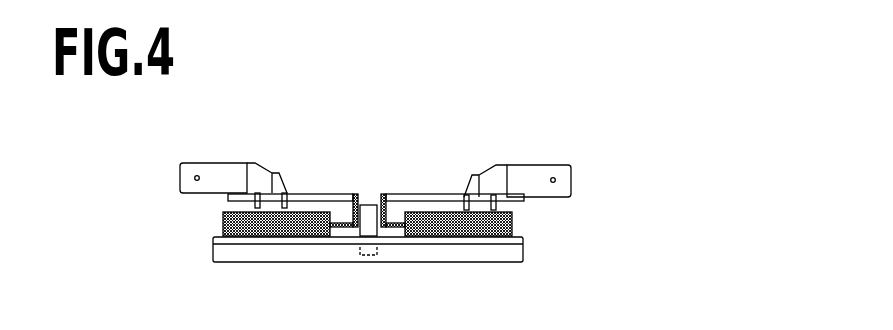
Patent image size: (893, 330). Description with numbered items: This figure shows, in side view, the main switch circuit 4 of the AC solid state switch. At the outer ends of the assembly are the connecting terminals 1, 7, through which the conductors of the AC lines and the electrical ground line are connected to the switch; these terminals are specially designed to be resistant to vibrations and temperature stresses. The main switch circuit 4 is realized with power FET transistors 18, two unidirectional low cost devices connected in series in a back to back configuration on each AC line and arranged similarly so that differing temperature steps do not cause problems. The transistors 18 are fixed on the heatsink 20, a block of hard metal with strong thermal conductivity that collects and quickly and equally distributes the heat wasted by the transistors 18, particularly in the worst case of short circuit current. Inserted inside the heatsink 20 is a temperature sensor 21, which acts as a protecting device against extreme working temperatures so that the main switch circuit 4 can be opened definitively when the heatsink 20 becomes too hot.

The main switch circuit 4 is at (338, 180).
The connecting terminal 7 is at (193, 165).
The connecting terminal 1 is at (543, 173).
The temperature sensor 21 is at (372, 195).
The power FET transistors 18 is at (207, 223).
The heatsink 20 is at (500, 267).